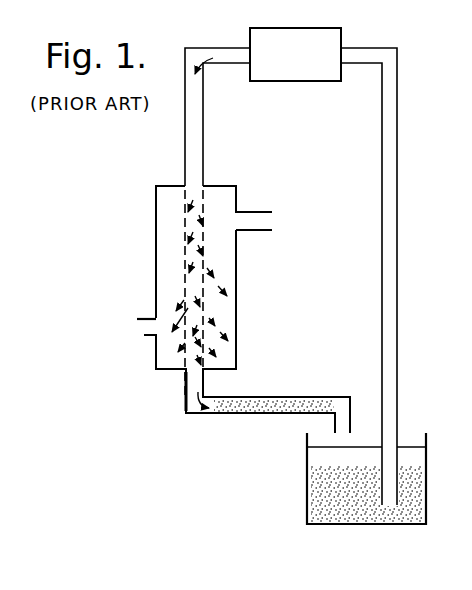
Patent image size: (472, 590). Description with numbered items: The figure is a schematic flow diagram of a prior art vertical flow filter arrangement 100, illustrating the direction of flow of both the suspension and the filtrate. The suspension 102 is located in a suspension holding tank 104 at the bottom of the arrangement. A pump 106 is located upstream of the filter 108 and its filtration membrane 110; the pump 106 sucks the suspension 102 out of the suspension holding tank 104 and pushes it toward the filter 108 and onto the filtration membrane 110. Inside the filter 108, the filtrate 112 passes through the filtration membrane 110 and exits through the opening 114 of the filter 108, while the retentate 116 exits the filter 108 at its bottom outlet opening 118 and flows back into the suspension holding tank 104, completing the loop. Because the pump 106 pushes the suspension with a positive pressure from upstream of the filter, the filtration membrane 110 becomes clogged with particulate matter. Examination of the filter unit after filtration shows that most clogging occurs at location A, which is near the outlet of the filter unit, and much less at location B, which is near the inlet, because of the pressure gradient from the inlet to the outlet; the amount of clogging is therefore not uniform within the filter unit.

The vertical flow filter arrangement 100 is at (414, 197).
The suspension 102 is at (338, 506).
The suspension holding tank 104 is at (307, 505).
The pump 106 is at (340, 31).
The filter 108 is at (238, 280).
The filtration membrane 110 is at (205, 306).
The filtrate 112 is at (168, 322).
The opening 114 is at (147, 337).
The retentate 116 is at (293, 410).
The bottom outlet opening 118 is at (203, 381).
The location A is at (178, 352).
The location B is at (181, 204).